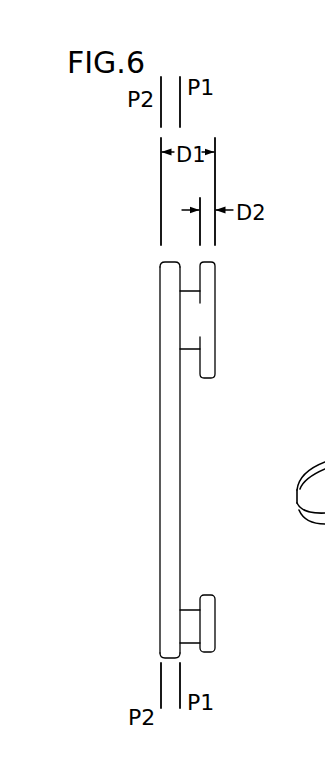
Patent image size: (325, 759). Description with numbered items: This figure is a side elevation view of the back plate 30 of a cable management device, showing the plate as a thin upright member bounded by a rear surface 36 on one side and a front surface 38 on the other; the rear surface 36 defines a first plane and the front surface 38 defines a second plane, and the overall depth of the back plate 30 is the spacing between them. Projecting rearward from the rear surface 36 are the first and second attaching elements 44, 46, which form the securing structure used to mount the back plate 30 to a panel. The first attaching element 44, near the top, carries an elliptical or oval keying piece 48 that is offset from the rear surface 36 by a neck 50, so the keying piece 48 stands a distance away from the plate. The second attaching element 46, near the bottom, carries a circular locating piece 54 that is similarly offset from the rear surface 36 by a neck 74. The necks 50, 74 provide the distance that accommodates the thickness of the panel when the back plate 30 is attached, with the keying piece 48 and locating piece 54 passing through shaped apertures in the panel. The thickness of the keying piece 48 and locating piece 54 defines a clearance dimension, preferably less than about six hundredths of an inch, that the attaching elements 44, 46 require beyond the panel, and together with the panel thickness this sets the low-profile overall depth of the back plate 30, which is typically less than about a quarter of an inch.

The back plate 30 is at (127, 266).
The rear surface 36 is at (180, 480).
The front surface 38 is at (160, 485).
The first attaching element 44 is at (236, 282).
The second attaching element 46 is at (226, 648).
The keying piece 48 is at (215, 358).
The neck 50 is at (188, 350).
The locating piece 54 is at (208, 594).
The neck 74 is at (188, 645).